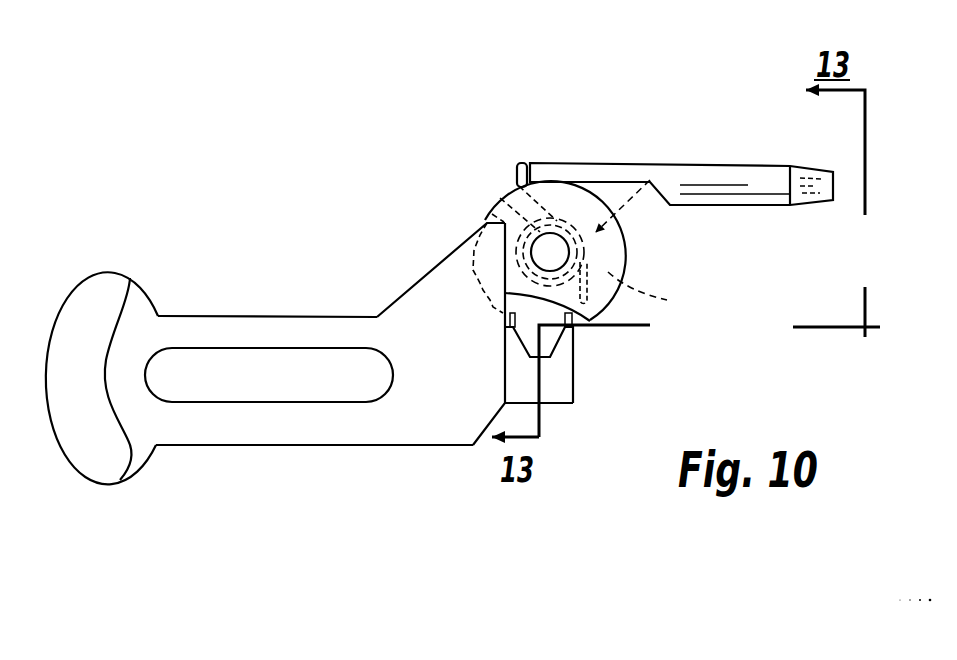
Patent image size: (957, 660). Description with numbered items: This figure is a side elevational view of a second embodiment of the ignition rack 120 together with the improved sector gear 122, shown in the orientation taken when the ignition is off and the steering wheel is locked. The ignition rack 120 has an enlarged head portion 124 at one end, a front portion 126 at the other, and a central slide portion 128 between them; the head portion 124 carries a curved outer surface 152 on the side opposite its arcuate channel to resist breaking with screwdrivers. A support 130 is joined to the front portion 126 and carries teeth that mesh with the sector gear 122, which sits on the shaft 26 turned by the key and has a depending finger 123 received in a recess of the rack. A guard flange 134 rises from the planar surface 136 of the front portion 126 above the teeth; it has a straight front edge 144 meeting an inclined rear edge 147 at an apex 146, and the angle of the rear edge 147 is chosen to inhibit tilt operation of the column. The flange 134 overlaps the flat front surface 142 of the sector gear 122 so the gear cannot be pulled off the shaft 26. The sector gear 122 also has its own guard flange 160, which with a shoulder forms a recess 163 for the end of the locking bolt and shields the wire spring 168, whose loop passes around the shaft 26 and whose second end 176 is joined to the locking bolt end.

The shaft 26 is at (657, 297).
The ignition rack 120 is at (260, 304).
The sector gear 122 is at (632, 261).
The depending finger 123 is at (568, 348).
The enlarged head portion 124 is at (90, 264).
The front portion 126 is at (448, 459).
The central slide portion 128 is at (277, 458).
The support 130 is at (580, 404).
The guard flange 134 is at (462, 210).
The planar surface 136 is at (460, 386).
The front surface 142 is at (572, 210).
The straight front edge 144 is at (578, 313).
The apex 146 is at (485, 222).
The inclined rear edge 147 is at (425, 270).
The curved outer surface 152 is at (82, 443).
The guard flange 160 is at (502, 188).
The recess 163 is at (498, 200).
The spring 168 is at (662, 163).
The second end 176 is at (527, 160).